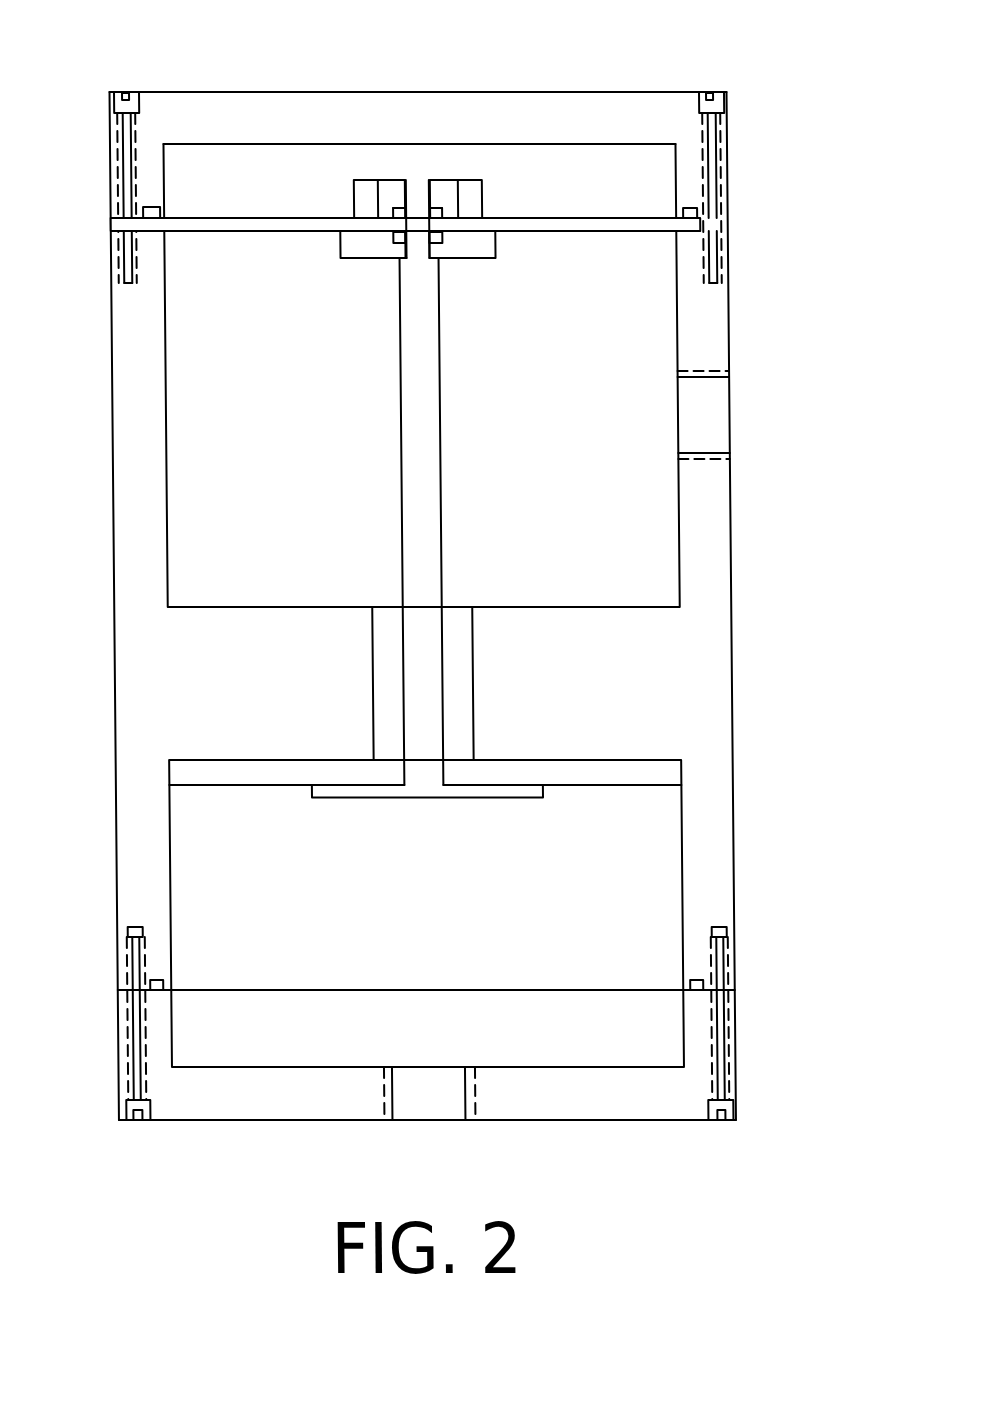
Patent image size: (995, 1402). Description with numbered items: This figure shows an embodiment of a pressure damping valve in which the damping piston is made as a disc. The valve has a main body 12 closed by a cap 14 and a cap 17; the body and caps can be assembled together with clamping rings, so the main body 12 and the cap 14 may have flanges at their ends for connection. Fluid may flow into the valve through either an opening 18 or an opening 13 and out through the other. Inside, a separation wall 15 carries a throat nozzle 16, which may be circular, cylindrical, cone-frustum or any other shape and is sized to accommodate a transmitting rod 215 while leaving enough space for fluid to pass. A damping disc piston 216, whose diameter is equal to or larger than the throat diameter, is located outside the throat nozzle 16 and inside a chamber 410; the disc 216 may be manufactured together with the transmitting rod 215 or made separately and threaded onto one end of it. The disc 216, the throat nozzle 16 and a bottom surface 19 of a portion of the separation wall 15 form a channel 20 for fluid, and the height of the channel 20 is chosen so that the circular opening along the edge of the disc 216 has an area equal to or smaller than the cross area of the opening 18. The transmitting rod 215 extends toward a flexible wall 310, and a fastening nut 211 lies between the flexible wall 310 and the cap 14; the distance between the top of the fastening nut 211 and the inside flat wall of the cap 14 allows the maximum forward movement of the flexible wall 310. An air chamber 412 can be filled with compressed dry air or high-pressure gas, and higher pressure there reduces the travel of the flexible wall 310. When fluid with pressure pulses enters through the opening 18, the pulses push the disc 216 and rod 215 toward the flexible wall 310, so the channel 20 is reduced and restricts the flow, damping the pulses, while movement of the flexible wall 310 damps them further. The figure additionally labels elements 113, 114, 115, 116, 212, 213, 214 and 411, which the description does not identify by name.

The main body 12 is at (708, 677).
The opening 13 is at (712, 425).
The cap 14 is at (590, 112).
The separation wall 15 is at (238, 647).
The throat nozzle 16 is at (386, 758).
The cap 17 is at (277, 1100).
The opening 18 is at (432, 1098).
The bottom surface 19 is at (213, 762).
The channel 20 is at (520, 769).
The right nut 113 is at (697, 211).
The right top bolt 114 is at (718, 97).
The left top bolt 115 is at (140, 92).
The left nut 116 is at (146, 209).
The fastening nut 211 is at (469, 193).
The left upper bearing block 212 is at (398, 208).
The left lower retaining piece 213 is at (398, 237).
The right lower retaining piece 214 is at (392, 256).
The transmitting rod 215 is at (413, 472).
The damping disc piston 216 is at (306, 797).
The flexible wall 310 is at (588, 232).
The chamber 410 is at (626, 855).
The upper unit 411 is at (642, 522).
The air chamber 412 is at (636, 165).